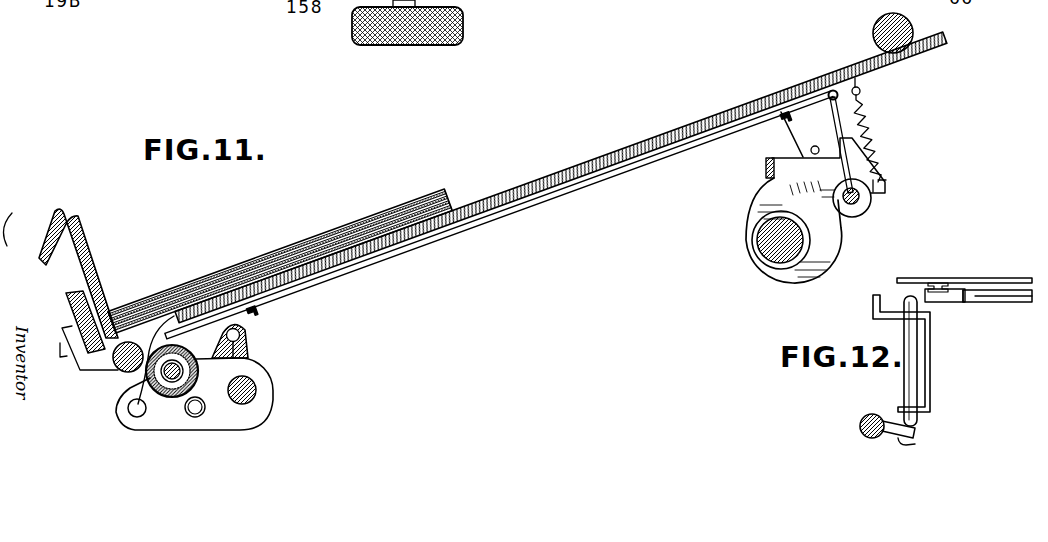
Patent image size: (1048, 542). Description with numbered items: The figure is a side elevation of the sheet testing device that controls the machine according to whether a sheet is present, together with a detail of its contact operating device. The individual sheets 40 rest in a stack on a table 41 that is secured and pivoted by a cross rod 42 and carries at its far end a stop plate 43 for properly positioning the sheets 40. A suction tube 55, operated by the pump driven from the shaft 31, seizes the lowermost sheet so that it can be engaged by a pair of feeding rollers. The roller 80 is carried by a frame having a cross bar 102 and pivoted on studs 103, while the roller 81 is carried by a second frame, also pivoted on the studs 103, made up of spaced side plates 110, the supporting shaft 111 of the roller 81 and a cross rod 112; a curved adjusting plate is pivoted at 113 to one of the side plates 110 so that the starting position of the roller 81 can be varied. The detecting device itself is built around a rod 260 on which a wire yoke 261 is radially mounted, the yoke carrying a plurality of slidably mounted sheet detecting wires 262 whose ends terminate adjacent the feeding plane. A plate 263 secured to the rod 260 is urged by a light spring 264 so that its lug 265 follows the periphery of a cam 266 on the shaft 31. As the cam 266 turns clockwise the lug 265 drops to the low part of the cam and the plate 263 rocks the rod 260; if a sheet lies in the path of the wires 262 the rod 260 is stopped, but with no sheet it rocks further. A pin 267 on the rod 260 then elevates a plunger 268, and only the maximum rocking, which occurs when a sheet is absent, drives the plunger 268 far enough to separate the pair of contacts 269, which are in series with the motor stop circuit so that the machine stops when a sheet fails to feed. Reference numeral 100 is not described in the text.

In FIG. 11, the shaft 31 is at (765, 258).
In FIG. 11, the sheets 40 is at (344, 222).
In FIG. 11, the table 41 is at (512, 190).
In FIG. 11, the cross rod 42 is at (873, 26).
In FIG. 11, the stop plate 43 is at (89, 243).
In FIG. 11, the suction tube 55 is at (249, 340).
In FIG. 11, the roller 80 is at (118, 368).
In FIG. 11, the roller 81 is at (168, 394).
In FIG. 11, the spring wire 100 is at (147, 337).
In FIG. 11, the cross bar 102 is at (72, 304).
In FIG. 11, the studs 103 is at (129, 413).
In FIG. 11, the side plates 110 is at (175, 426).
In FIG. 11, the supporting shaft 111 is at (190, 375).
In FIG. 11, the cross rod 112 is at (257, 390).
In FIG. 11, the pivot 113 is at (205, 408).
In FIG. 11, the rod 260 is at (859, 199).
In FIG. 12, the rod 260 is at (860, 423).
In FIG. 11, the wire yoke 261 is at (838, 120).
In FIG. 11, the sheet detecting wires 262 is at (723, 128).
In FIG. 11, the plate 263 is at (780, 160).
In FIG. 11, the light spring 264 is at (878, 153).
In FIG. 11, the lug 265 is at (766, 168).
In FIG. 11, the cam 266 is at (778, 206).
In FIG. 12, the pin 267 is at (908, 441).
In FIG. 12, the plunger 268 is at (912, 362).
In FIG. 12, the contacts 269 is at (948, 290).